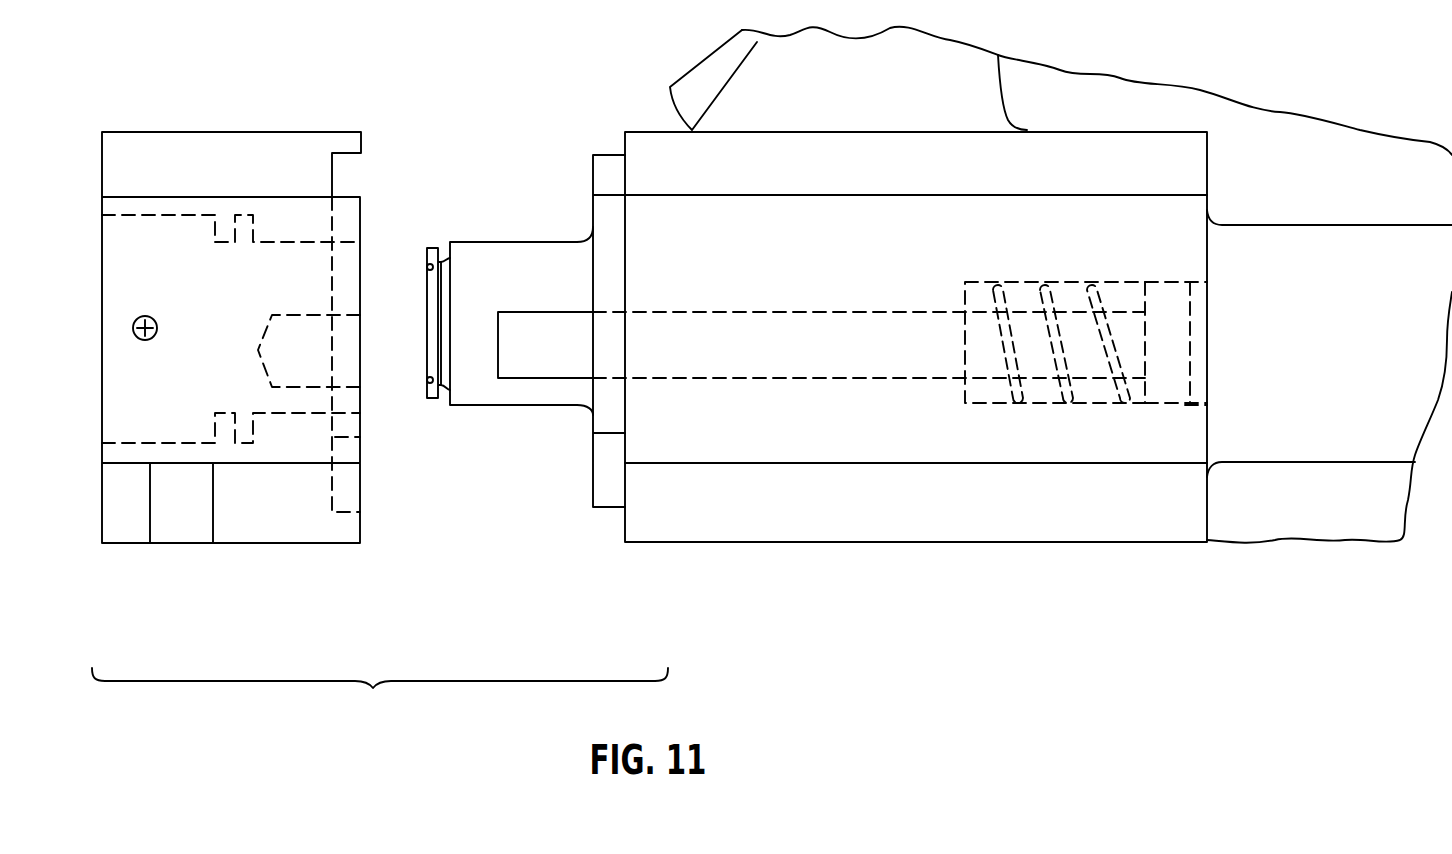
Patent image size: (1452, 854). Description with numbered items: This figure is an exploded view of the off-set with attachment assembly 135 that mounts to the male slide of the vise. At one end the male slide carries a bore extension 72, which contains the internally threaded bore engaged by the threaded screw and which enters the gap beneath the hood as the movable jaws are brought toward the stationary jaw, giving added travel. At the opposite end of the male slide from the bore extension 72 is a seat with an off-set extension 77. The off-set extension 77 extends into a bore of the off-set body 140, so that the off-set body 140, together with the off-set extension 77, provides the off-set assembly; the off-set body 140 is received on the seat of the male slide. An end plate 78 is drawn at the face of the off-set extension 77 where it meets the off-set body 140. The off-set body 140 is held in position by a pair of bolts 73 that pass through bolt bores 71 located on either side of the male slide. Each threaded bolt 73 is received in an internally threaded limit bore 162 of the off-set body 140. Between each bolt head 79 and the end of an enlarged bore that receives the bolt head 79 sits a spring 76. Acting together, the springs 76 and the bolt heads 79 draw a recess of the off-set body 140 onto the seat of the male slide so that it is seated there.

The off-set body 140 is at (205, 168).
The actuator assembly 135 is at (275, 114).
The limit bore 162 is at (303, 357).
The flange plate 78 is at (428, 266).
The off-set extension 77 is at (510, 242).
The bolt 73 is at (528, 383).
The bolt bore 71 is at (787, 380).
The spring 76 is at (1067, 403).
The bolt head 79 is at (1167, 397).
The bore extension 72 is at (1295, 258).